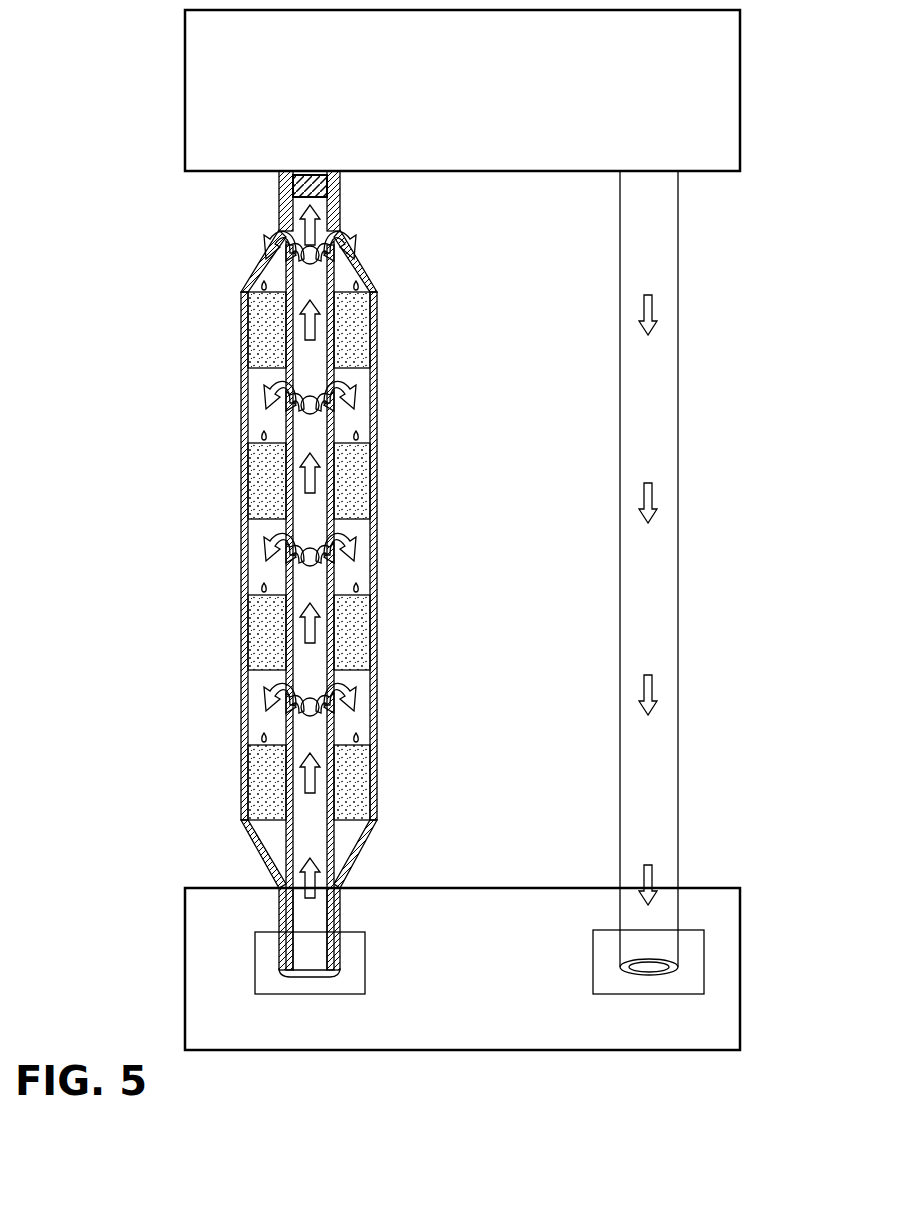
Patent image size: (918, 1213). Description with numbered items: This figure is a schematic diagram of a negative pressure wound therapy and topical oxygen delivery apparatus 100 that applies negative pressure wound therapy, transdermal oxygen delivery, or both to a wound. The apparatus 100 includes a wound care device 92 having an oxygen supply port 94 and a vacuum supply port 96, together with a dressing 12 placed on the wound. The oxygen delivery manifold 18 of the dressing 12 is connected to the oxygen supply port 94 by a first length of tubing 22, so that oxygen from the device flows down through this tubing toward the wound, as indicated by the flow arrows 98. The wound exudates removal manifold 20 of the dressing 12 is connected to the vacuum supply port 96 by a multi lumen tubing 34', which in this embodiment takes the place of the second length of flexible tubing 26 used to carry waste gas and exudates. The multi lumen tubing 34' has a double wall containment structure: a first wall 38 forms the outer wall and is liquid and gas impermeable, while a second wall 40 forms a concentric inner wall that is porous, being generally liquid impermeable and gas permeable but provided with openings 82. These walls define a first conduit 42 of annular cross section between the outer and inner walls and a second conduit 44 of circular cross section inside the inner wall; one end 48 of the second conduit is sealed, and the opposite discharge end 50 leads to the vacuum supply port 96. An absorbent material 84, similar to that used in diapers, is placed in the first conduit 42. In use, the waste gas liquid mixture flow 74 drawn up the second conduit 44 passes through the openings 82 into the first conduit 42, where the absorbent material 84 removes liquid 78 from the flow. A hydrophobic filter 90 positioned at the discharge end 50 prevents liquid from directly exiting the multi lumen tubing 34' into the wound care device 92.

The dressing 12 is at (466, 1028).
The oxygen delivery manifold 18 is at (706, 975).
The wound exudates removal manifold 20 is at (268, 996).
The first length of tubing 22 is at (682, 784).
The second length of flexible tubing 26 is at (243, 530).
The multi lumen tubing 34' is at (119, 605).
The first wall 38 is at (385, 293).
The second wall 40 is at (290, 336).
The first conduit 42 is at (283, 832).
The second conduit 44 is at (310, 928).
The one end of the second conduit 48 is at (365, 945).
The discharge end 50 is at (340, 184).
The waste gas liquid mixture flow 74 is at (292, 318).
The liquid 78 is at (362, 431).
The openings 82 is at (294, 390).
The absorbent material 84 is at (360, 336).
The hydrophobic filter 90 is at (292, 210).
The wound care device 92 is at (466, 74).
The oxygen supply port 94 is at (648, 170).
The vacuum supply port 96 is at (310, 170).
The downward flow arrows 98 is at (655, 312).
The NPWT and topical oxygen delivery apparatus 100 is at (752, 216).